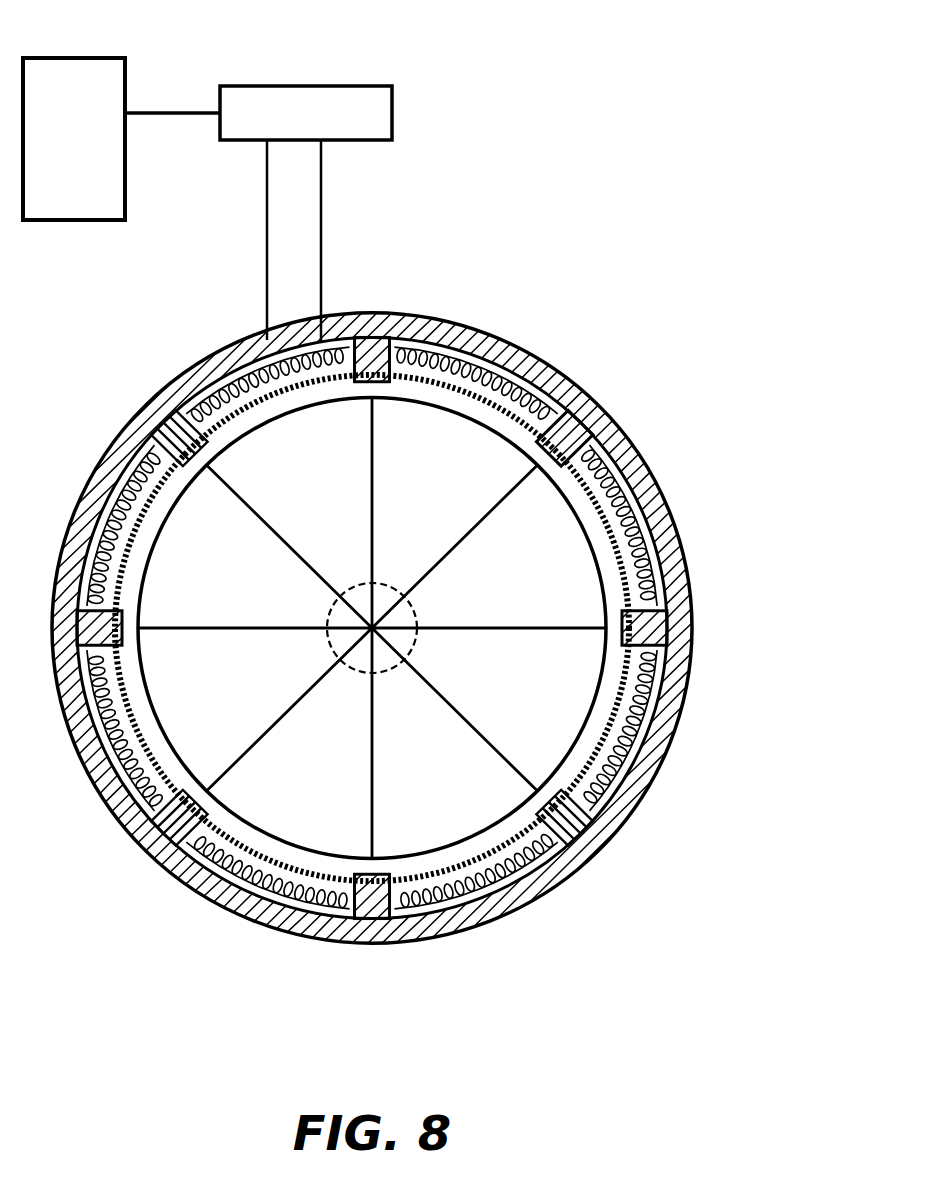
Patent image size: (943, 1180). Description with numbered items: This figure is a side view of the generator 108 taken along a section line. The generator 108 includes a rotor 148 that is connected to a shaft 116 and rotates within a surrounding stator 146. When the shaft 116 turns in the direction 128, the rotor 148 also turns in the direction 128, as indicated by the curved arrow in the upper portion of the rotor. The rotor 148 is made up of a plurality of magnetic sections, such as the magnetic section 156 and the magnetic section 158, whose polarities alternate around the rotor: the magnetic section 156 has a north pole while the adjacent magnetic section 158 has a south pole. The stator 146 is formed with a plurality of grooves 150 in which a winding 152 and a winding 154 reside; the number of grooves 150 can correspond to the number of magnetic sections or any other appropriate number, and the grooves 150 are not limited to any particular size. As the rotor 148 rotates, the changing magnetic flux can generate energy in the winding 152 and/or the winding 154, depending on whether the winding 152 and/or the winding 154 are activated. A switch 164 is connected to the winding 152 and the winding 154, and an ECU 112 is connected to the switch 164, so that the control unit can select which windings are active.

The generator 108 is at (436, 616).
The ECU 112 is at (72, 58).
The shaft 116 is at (423, 637).
The direction 128 is at (488, 472).
The stator 146 is at (692, 617).
The rotor 148 is at (493, 797).
The grooves 150 is at (409, 318).
The winding 152 is at (578, 390).
The winding 154 is at (525, 398).
The magnetic section 156 is at (260, 812).
The magnetic section 158 is at (183, 752).
The switch 164 is at (305, 86).